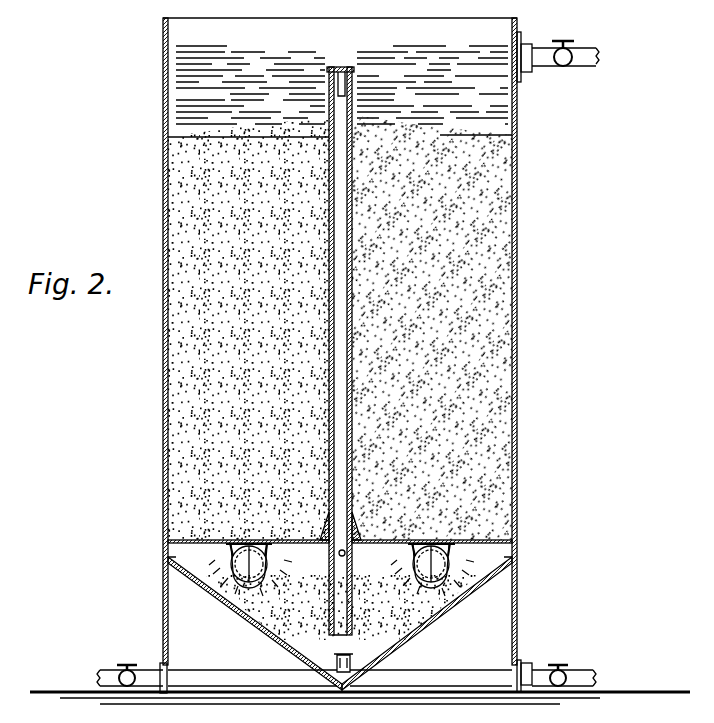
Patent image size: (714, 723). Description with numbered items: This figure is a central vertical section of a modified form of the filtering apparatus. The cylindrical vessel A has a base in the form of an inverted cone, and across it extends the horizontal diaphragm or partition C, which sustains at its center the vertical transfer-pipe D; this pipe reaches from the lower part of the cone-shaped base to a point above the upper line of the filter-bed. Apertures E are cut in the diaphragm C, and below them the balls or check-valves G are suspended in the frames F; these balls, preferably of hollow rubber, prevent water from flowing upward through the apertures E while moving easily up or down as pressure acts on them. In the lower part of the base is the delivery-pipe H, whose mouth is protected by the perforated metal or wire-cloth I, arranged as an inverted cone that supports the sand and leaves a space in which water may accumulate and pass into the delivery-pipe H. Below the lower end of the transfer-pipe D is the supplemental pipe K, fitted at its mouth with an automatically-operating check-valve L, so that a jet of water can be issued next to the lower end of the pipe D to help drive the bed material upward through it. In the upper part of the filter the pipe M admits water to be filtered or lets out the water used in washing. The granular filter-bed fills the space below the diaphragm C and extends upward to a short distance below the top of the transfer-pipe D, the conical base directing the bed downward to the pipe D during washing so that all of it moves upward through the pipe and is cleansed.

The cylindrical vessel A is at (340, 341).
The vertical transfer-pipe D is at (342, 351).
The horizontal diaphragm or partition C is at (340, 531).
The apertures E is at (340, 540).
The frames F is at (341, 570).
The balls or check-valves G is at (340, 564).
The perforated metal or wire-cloth I is at (340, 623).
The automatically-operating check-valve L is at (338, 656).
The supplemental pipe K is at (217, 674).
The delivery-pipe H is at (473, 673).
The pipe M is at (558, 58).